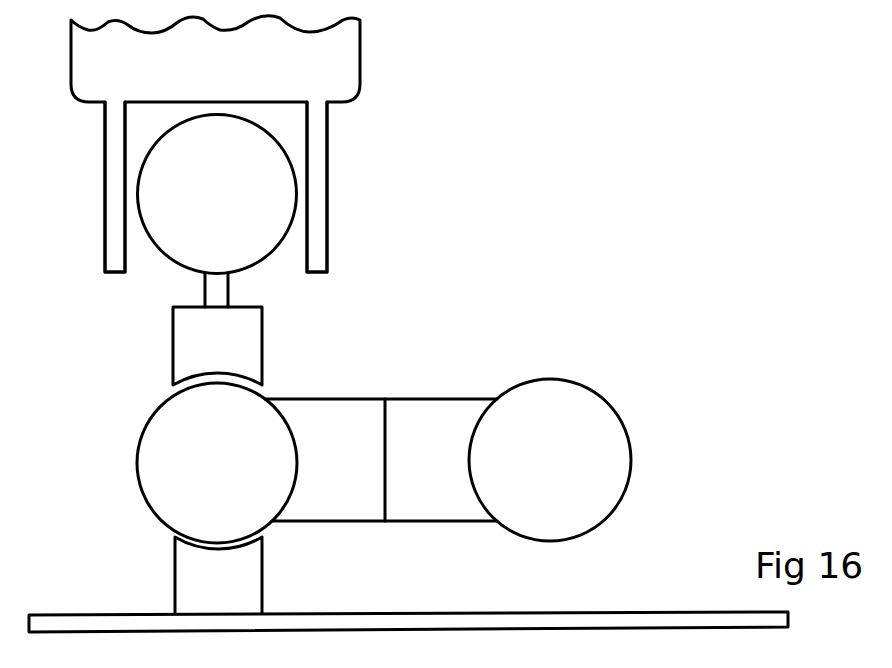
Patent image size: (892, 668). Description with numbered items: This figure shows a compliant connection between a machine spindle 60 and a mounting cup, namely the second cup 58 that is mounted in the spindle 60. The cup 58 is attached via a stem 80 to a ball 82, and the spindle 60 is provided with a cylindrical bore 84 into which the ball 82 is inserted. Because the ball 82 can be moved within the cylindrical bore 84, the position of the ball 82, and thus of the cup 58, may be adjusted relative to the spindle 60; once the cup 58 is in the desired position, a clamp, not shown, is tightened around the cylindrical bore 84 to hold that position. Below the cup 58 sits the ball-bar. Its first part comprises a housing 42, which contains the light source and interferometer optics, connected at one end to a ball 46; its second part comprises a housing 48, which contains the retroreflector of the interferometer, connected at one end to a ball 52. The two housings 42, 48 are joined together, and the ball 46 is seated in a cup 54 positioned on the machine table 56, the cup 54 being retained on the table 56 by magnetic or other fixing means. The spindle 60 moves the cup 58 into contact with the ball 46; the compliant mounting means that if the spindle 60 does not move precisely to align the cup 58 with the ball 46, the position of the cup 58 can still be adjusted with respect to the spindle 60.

The machine spindle 60 is at (338, 71).
The cylindrical bore 84 is at (315, 155).
The ball 82 is at (258, 216).
The stem 80 is at (212, 290).
The second cup 58 is at (183, 352).
The ball 46 is at (155, 450).
The housing 42 is at (327, 408).
The housing 48 is at (449, 413).
The ball 52 is at (610, 463).
The cup 54 is at (185, 578).
The machine table 56 is at (609, 618).